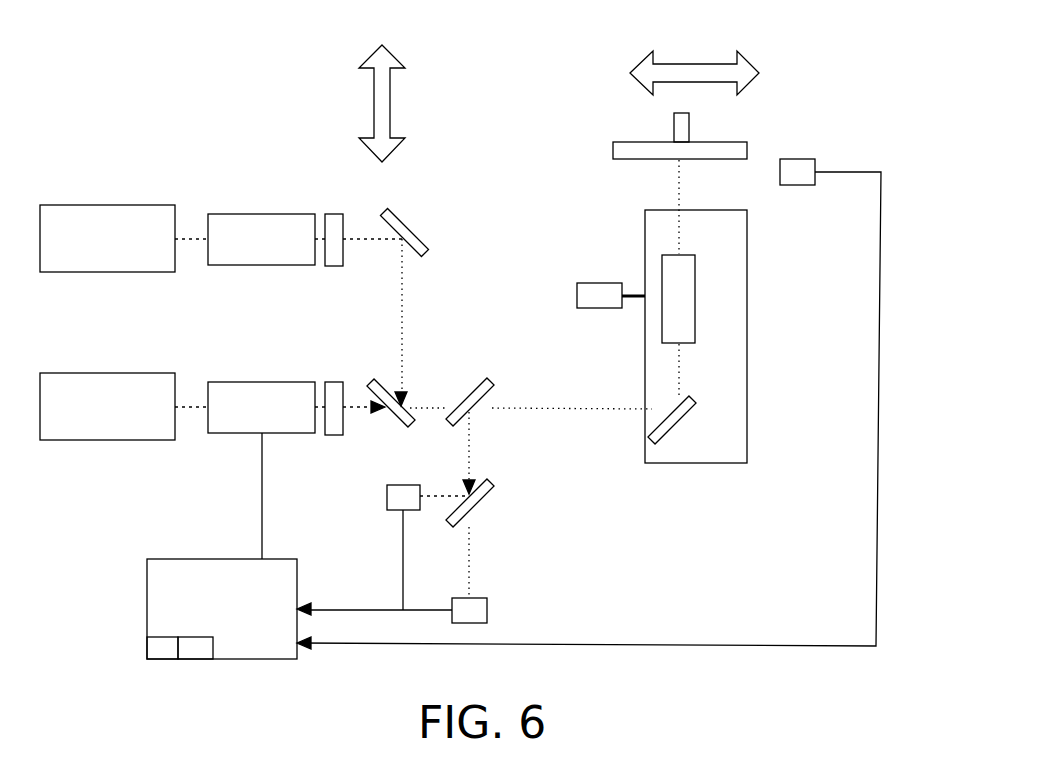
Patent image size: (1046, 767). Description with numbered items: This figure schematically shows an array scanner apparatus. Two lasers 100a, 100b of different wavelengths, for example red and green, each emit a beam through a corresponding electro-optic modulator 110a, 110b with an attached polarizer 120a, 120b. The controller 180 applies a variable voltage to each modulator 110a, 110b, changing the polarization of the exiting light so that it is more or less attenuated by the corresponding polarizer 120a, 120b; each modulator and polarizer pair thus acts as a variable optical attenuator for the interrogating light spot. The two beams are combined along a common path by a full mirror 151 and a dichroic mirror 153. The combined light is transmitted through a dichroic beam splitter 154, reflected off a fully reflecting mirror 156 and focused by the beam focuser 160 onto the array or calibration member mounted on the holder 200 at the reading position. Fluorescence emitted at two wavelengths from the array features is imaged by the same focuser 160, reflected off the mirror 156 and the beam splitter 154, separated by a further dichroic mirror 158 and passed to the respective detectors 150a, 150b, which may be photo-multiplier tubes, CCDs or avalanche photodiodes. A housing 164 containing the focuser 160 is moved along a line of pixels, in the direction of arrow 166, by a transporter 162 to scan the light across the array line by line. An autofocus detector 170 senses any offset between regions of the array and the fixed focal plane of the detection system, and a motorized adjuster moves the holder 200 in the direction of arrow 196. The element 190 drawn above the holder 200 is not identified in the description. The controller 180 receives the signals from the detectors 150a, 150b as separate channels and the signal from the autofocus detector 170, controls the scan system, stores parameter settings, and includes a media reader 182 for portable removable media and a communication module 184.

The laser 100a is at (72, 373).
The laser 100b is at (72, 205).
The electro-optic modulator 110a is at (242, 381).
The electro-optic modulator 110b is at (242, 213).
The polarizer 120a is at (342, 381).
The polarizer 120b is at (342, 213).
The full mirror 151 is at (407, 230).
The dichroic mirror 153 is at (413, 398).
The dichroic beam splitter 154 is at (482, 400).
The fully reflecting mirror 156 is at (670, 433).
The dichroic mirror 158 is at (483, 503).
The detector 150a is at (387, 495).
The detector 150b is at (487, 608).
The beam focuser 160 is at (697, 298).
The transporter 162 is at (577, 288).
The housing 164 is at (747, 345).
The arrow 166 is at (700, 63).
The autofocus detector 170 is at (797, 185).
The controller 180 is at (193, 559).
The media reader 182 is at (152, 650).
The communication module 184 is at (193, 653).
The workpiece / sample 190 is at (689, 128).
The arrow 196 is at (393, 87).
The holder 200 is at (613, 152).